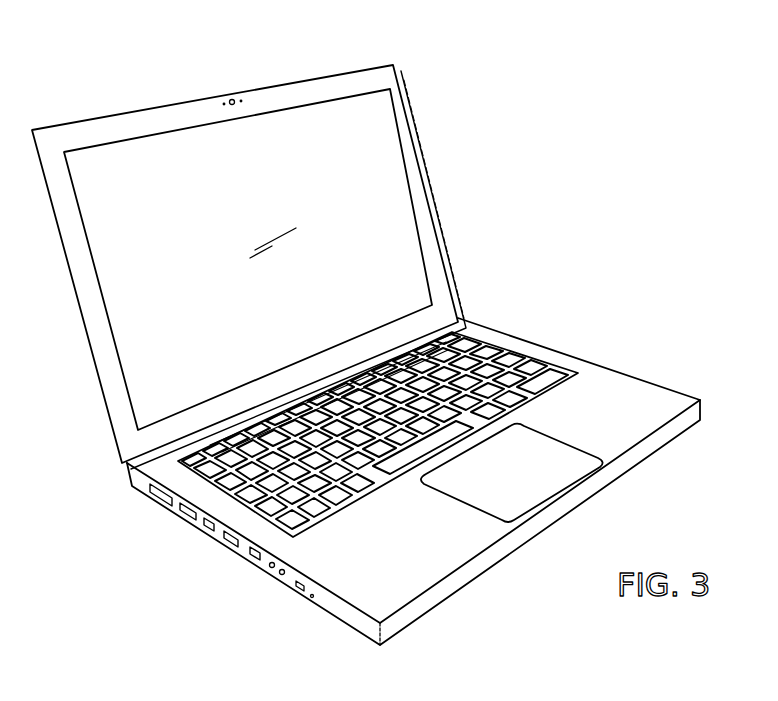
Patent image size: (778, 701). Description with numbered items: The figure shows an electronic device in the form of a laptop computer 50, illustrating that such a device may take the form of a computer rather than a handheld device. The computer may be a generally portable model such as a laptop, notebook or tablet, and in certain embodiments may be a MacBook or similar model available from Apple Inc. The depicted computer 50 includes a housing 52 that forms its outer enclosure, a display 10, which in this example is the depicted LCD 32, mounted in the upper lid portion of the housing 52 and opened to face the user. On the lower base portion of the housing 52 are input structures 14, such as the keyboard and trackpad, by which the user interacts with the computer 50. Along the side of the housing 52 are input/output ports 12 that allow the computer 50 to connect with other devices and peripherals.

The display 10 is at (396, 199).
The input/output ports 12 is at (206, 528).
The input structures 14 is at (507, 362).
The LCD 32 is at (395, 150).
The laptop computer 50 is at (366, 331).
The housing 52 is at (620, 372).